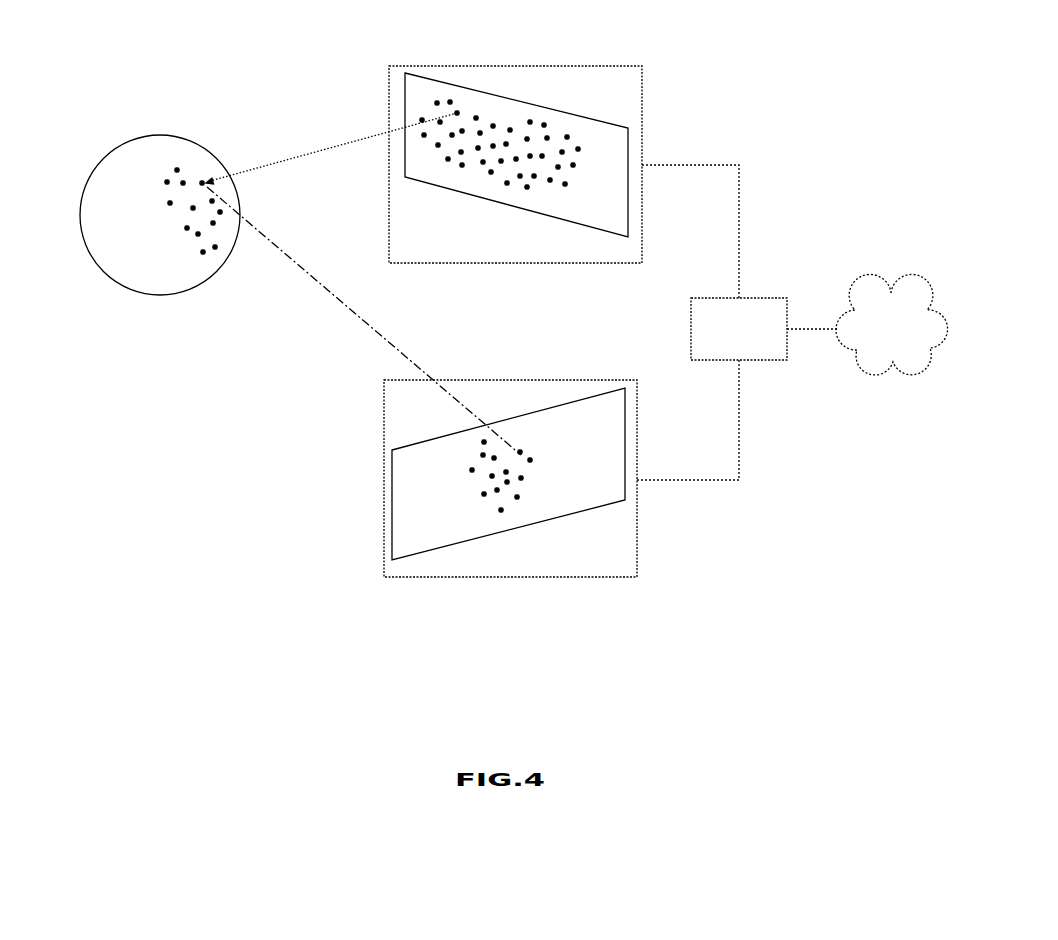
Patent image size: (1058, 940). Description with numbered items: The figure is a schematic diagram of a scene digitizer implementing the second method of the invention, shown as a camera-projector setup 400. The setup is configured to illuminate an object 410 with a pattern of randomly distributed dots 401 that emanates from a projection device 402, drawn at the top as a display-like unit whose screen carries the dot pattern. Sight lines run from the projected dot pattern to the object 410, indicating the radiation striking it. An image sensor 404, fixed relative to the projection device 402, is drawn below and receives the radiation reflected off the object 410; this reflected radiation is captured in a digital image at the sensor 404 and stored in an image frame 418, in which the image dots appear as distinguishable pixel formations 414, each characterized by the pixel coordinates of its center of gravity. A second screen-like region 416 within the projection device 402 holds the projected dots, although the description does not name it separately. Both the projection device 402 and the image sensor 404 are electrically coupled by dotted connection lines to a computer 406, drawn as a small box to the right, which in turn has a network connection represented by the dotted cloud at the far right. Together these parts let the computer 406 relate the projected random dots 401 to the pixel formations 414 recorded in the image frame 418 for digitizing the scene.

The camera-projector setup 400 is at (250, 436).
The pattern of randomly distributed dots 401 is at (459, 175).
The projection device 402 is at (489, 141).
The image sensor 404 is at (510, 467).
The computer 406 is at (757, 297).
The object 410 is at (116, 146).
The distinguishable pixel formations 414 is at (469, 525).
The first display screen 416 is at (516, 207).
The image frame 418 is at (562, 520).